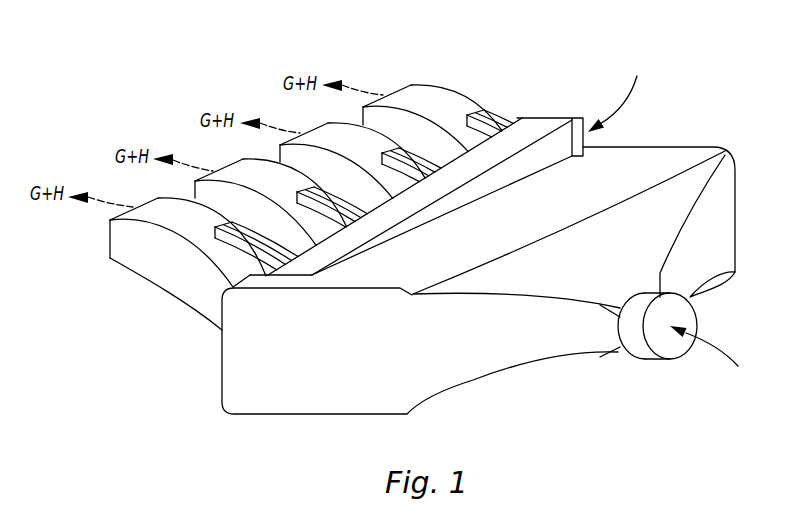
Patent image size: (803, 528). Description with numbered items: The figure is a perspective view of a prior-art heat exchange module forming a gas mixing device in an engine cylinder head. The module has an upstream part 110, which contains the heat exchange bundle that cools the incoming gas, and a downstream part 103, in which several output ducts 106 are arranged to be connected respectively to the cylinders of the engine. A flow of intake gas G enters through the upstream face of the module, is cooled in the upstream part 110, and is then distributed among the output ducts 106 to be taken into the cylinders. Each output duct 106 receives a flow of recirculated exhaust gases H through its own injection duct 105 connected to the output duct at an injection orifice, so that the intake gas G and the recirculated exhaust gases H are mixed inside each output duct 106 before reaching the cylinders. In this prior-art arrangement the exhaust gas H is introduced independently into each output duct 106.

The downstream part 103 is at (181, 281).
The injection duct 105 is at (233, 230).
The output duct 106 is at (147, 243).
The upstream part 110 is at (633, 157).
The flow of intake gas G is at (712, 355).
The flow of recirculated exhaust gases H is at (620, 92).